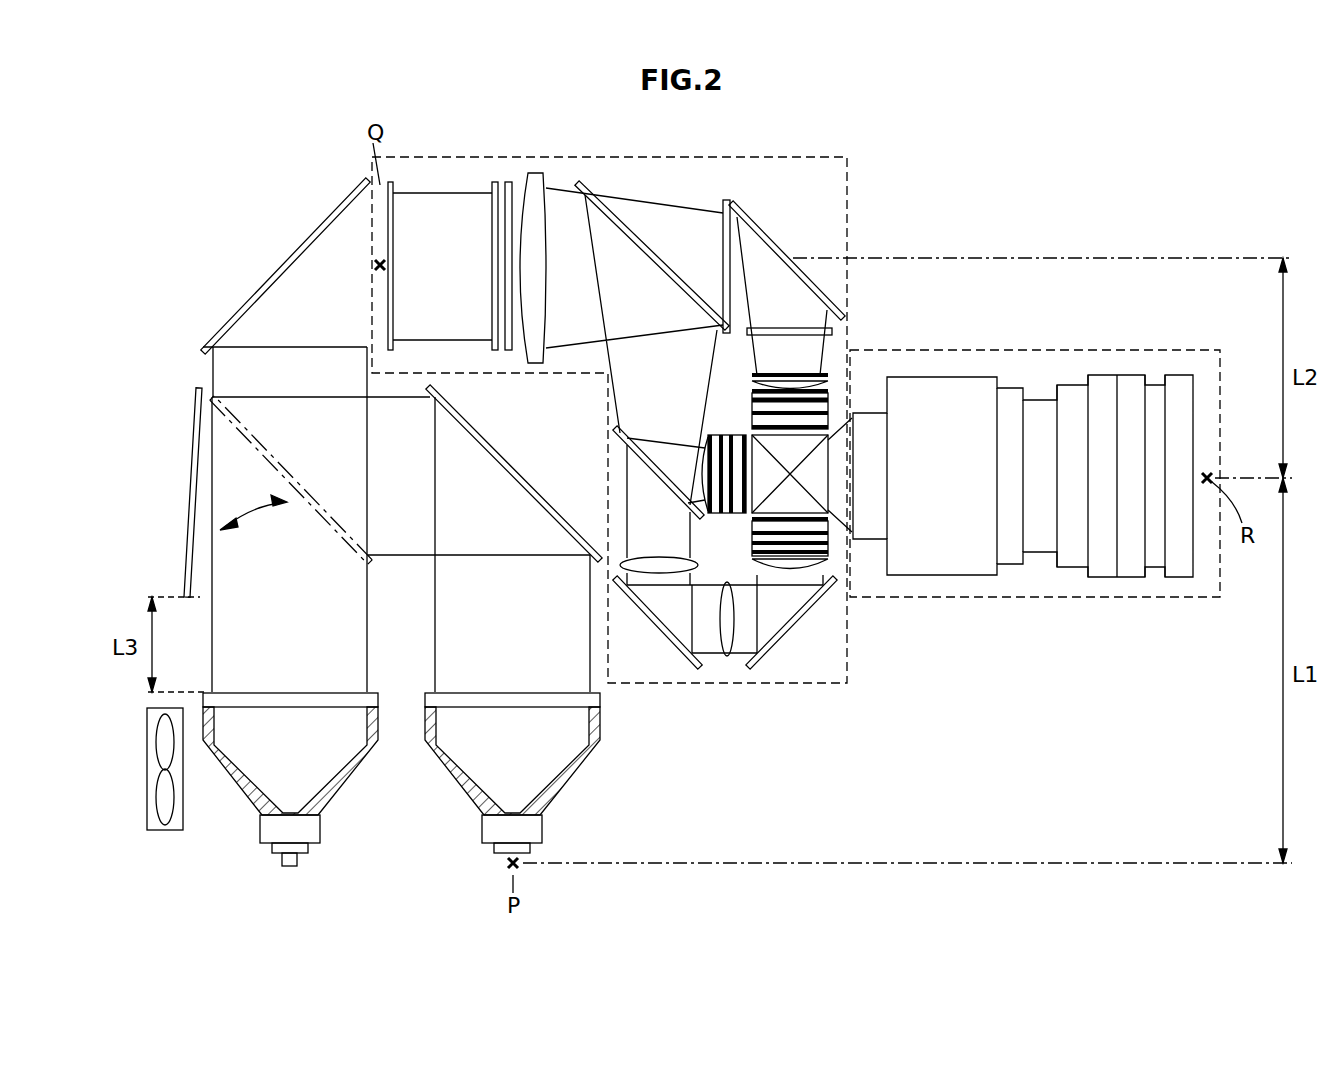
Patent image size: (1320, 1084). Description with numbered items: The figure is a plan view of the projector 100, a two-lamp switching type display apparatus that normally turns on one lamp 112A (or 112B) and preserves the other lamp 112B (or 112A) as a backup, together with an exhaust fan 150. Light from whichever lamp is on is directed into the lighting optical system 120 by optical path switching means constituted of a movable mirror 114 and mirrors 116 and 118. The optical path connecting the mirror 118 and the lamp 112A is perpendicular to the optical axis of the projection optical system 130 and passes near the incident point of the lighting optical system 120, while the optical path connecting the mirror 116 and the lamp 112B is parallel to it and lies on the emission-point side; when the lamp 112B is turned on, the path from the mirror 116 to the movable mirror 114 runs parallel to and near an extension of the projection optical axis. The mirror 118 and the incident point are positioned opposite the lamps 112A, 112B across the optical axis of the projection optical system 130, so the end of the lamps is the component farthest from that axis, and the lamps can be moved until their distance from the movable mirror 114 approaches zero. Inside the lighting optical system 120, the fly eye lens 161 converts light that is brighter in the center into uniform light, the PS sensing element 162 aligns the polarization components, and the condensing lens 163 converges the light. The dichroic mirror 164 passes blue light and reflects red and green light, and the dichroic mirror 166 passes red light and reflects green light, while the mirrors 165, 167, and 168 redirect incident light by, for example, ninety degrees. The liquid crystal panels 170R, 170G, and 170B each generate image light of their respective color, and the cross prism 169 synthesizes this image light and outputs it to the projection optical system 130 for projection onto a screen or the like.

The projector 100 is at (1080, 217).
The lamp 112A is at (348, 787).
The lamp 112B is at (455, 788).
The movable mirror 114 is at (192, 483).
The mirror 116 is at (477, 432).
The mirror 118 is at (272, 273).
The lighting optical system 120 is at (813, 157).
The projection optical system 130 is at (1073, 383).
The exhaust fan 150 is at (163, 830).
The fly eye lens 161 is at (390, 180).
The PS sensing element 162 is at (508, 182).
The condensing lens 163 is at (535, 177).
The dichroic mirror 164 is at (587, 192).
The mirror 165 is at (737, 210).
The dichroic mirror 166 is at (617, 433).
The mirror 167 is at (682, 650).
The mirror 168 is at (770, 653).
The cross prism 169 is at (818, 482).
The liquid crystal panel 170B is at (750, 417).
The liquid crystal panel 170G is at (728, 515).
The liquid crystal panel 170R is at (830, 530).